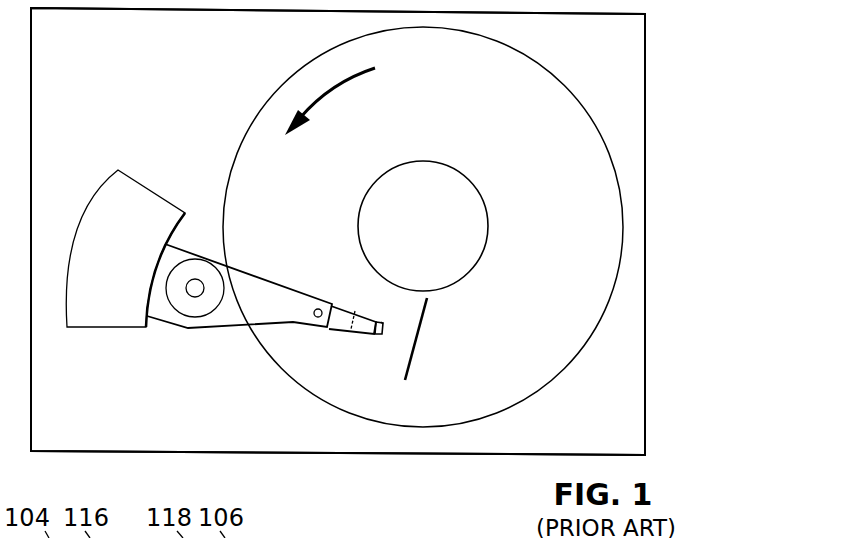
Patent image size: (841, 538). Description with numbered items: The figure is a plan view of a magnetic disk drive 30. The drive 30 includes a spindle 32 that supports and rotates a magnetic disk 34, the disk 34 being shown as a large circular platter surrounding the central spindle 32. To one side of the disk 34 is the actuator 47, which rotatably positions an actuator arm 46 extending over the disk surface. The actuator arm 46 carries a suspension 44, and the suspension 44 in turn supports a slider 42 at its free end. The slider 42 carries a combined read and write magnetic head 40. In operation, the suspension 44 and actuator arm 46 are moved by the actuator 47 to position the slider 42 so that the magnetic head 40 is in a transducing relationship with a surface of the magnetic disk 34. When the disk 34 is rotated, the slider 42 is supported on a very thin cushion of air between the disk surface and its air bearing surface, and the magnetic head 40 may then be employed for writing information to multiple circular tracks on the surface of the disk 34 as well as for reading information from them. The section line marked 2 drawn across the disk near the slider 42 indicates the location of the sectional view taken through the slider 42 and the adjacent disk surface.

The magnetic disk drive 30 is at (664, 49).
The spindle 32 is at (465, 173).
The magnetic disk 34 is at (542, 249).
The magnetic head 40 is at (380, 335).
The slider 42 is at (381, 322).
The suspension 44 is at (340, 332).
The actuator arm 46 is at (283, 286).
The actuator 47 is at (158, 198).
The section line 2- 2 is at (436, 308).